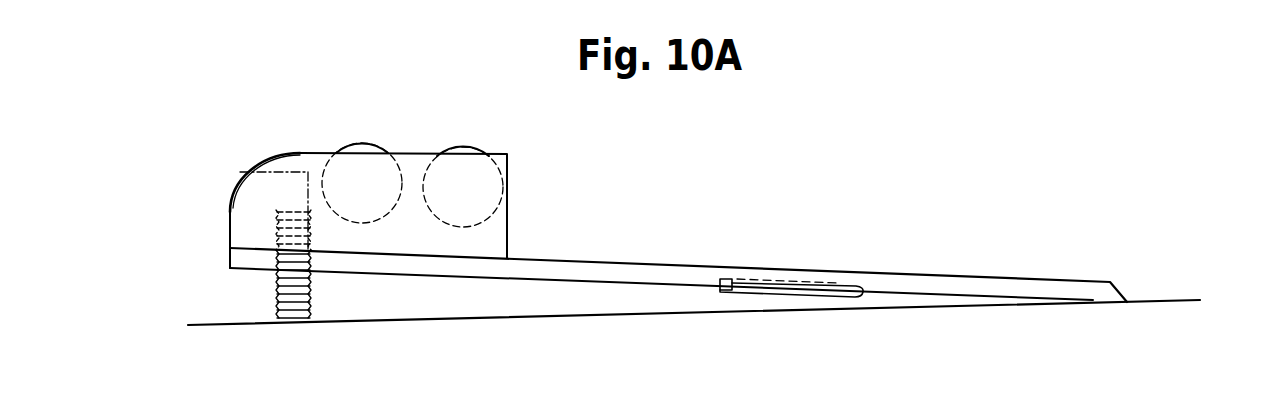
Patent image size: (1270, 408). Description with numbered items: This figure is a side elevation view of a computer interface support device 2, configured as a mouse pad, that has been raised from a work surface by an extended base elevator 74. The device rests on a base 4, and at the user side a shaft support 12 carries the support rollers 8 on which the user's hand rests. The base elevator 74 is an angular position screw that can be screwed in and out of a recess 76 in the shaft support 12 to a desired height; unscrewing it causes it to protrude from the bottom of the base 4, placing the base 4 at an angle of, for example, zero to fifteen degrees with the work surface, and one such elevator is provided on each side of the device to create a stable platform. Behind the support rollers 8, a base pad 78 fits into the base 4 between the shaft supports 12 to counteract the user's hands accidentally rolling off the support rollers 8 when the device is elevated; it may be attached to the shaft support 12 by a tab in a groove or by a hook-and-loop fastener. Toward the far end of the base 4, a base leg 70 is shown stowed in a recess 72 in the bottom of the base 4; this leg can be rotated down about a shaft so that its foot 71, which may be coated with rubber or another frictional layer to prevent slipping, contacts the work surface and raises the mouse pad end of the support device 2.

The computer interface support device 2 is at (830, 190).
The base 4 is at (996, 282).
The support rollers 8 is at (362, 143).
The shaft supports 12 is at (507, 240).
The base leg 70 is at (778, 297).
The foot 71 is at (720, 291).
The recess 72 is at (815, 280).
The base elevator 74 is at (270, 286).
The recess 76 is at (278, 237).
The base pad 78 is at (232, 190).